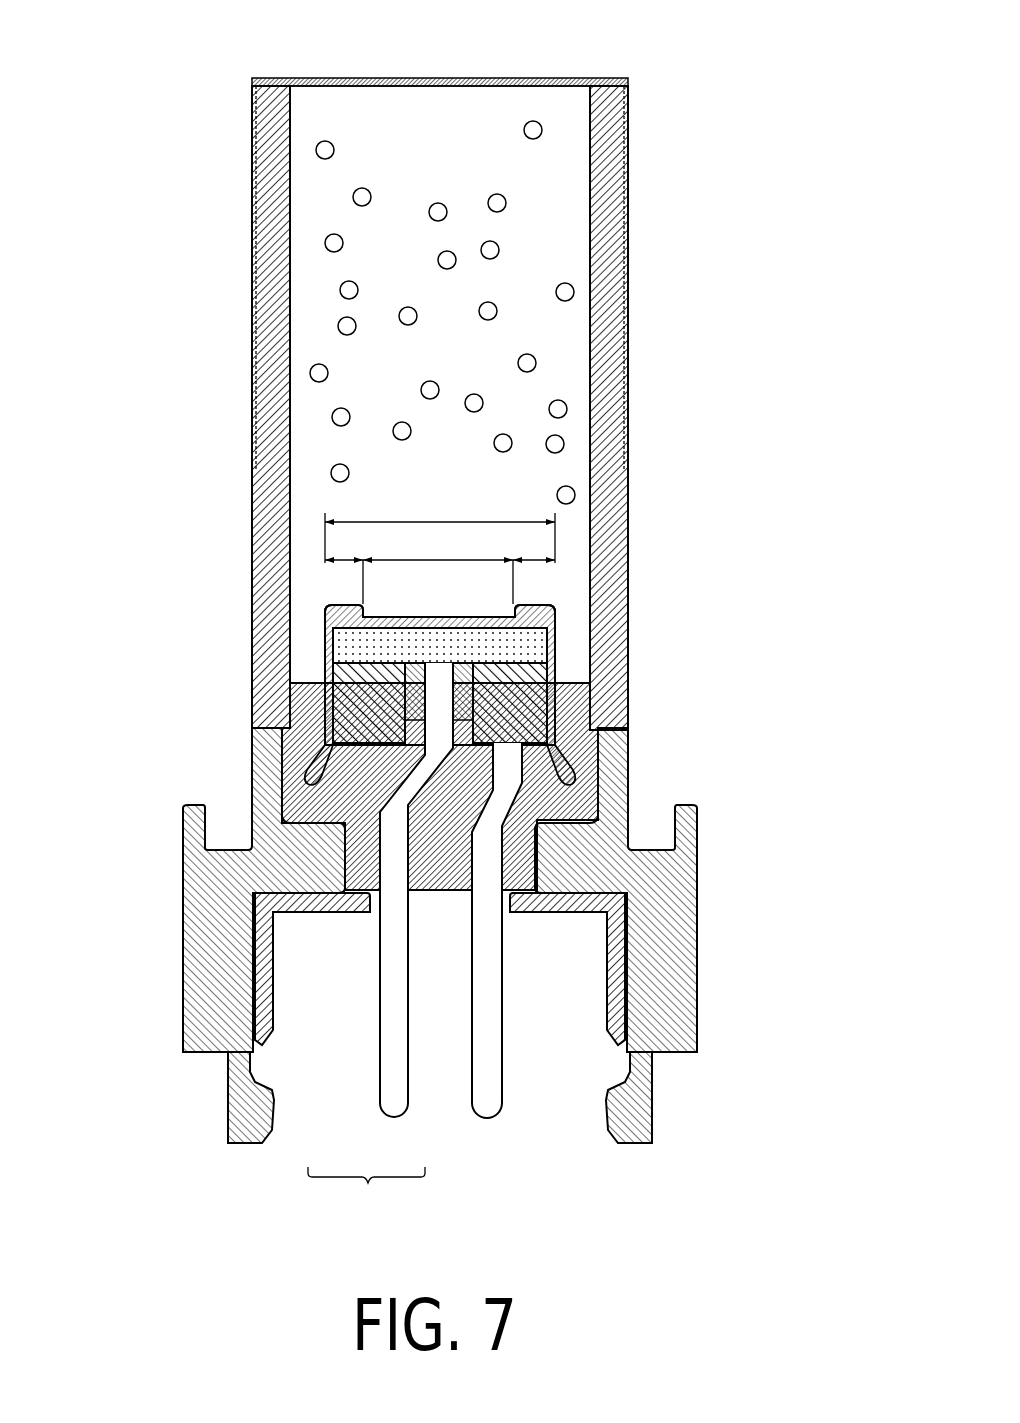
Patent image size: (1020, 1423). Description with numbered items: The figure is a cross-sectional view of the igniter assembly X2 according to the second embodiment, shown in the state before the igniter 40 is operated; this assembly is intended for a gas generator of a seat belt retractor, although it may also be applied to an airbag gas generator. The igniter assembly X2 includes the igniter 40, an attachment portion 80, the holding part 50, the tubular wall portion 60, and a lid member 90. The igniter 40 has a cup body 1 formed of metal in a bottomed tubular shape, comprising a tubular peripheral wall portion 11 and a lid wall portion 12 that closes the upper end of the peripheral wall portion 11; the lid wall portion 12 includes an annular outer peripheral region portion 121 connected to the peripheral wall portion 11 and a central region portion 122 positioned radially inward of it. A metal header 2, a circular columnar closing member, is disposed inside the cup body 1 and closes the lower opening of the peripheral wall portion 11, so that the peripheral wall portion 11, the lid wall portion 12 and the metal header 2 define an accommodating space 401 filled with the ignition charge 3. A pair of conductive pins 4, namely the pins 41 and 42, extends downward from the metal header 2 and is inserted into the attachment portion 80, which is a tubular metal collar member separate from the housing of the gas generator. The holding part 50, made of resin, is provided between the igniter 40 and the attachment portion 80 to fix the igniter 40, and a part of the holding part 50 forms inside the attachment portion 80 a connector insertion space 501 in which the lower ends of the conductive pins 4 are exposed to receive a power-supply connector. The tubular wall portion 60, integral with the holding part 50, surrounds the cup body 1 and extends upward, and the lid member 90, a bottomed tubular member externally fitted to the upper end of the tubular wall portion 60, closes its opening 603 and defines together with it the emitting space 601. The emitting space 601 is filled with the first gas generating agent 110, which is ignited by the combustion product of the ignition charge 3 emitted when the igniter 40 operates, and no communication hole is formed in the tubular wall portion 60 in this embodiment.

The cup body 1 is at (347, 601).
The metal header 2 is at (527, 658).
The ignition charge 3 is at (408, 636).
The conductive pins 4 is at (366, 1195).
The peripheral wall portion 11 is at (557, 672).
The lid wall portion 12 is at (440, 528).
The outer peripheral region portion 121 is at (440, 566).
The central region portion 122 is at (438, 546).
The igniter 40 is at (563, 652).
The conductive pin 41 is at (383, 1092).
The conductive pin 42 is at (473, 1092).
The holding part 50 is at (634, 707).
The tubular wall portion 60 is at (634, 512).
The attachment portion 80 is at (702, 912).
The lid member 90 is at (558, 74).
The first gas generating agent 110 is at (421, 386).
The accommodating space 401 is at (458, 659).
The connector insertion space 501 is at (334, 977).
The emitting space 601 is at (460, 172).
The opening 603 is at (318, 92).
The igniter assembly X2 is at (176, 675).